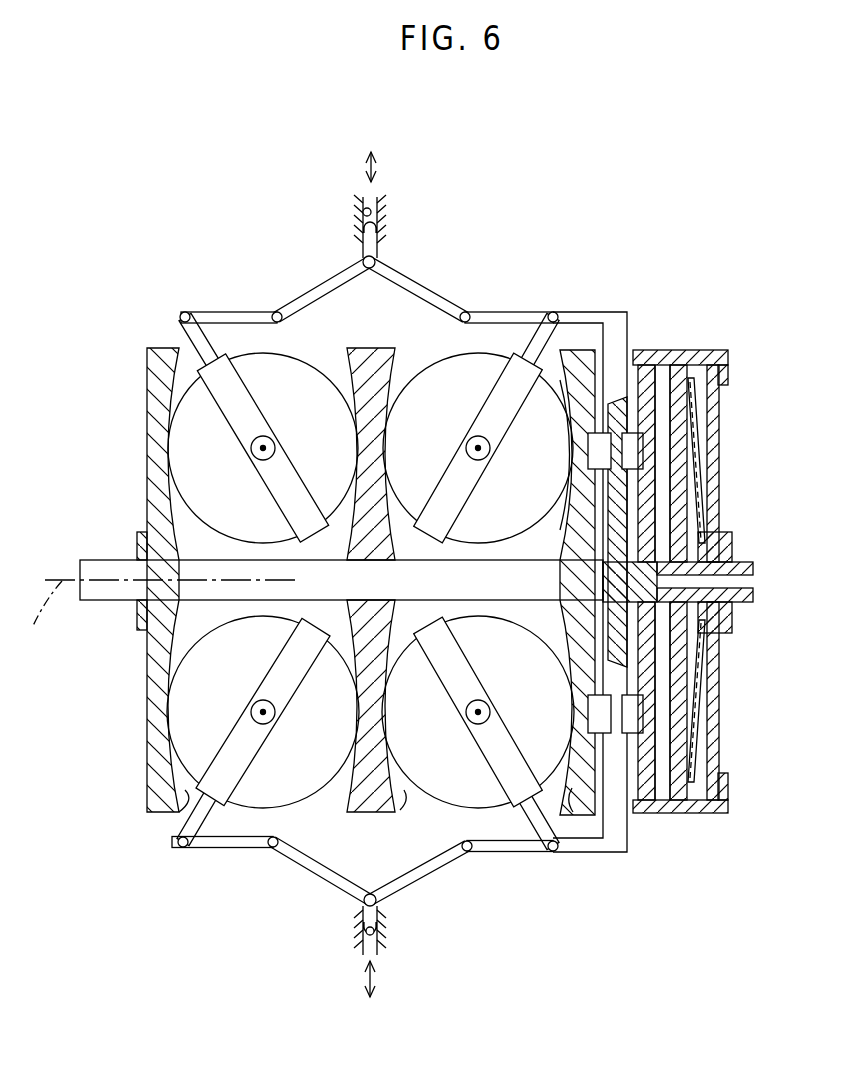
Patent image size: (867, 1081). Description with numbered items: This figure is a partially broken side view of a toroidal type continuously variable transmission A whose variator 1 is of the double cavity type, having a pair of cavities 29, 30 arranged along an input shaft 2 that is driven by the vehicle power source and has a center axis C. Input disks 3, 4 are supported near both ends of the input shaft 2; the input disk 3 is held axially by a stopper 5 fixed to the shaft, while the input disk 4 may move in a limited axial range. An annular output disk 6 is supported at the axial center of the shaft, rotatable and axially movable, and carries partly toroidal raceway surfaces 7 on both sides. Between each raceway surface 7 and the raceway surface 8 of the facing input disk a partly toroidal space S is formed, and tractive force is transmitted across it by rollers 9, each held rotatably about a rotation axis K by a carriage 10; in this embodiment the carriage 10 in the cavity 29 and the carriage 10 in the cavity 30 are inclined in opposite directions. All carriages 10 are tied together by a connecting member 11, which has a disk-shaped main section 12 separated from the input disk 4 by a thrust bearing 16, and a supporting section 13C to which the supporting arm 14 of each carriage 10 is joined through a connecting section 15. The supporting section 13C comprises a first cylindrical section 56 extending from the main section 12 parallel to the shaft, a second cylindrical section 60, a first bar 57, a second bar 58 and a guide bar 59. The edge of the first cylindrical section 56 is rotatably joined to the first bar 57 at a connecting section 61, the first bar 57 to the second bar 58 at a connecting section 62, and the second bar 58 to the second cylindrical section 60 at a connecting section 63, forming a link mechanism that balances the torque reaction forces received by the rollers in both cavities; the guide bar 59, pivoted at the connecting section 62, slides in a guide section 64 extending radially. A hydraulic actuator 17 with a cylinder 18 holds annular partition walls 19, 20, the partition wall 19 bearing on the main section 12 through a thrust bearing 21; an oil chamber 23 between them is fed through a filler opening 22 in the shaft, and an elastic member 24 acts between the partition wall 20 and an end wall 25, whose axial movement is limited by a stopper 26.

The variator 1 is at (261, 299).
The input shaft 2 is at (112, 558).
The input disk 3 is at (145, 385).
The input disk 4 is at (583, 347).
The stopper 5 is at (137, 622).
The output disk 6 is at (370, 817).
The raceway surface 7 is at (401, 380).
The raceway surface 8 is at (556, 406).
The roller 9 is at (199, 340).
The carriage 10 is at (224, 415).
The connecting member 11 is at (583, 305).
The main section 12 is at (628, 340).
The supporting section 13C is at (289, 291).
The supporting arm 14 is at (512, 312).
The connecting section 15 is at (181, 314).
The thrust bearing 16 is at (590, 456).
The hydraulic actuator 17 is at (727, 588).
The cylinder 18 is at (660, 815).
The partition wall 19 is at (655, 380).
The partition wall 20 is at (680, 412).
The thrust bearing 21 is at (634, 456).
The filler opening 22 is at (752, 582).
The oil chamber 23 is at (662, 490).
The elastic member 24 is at (695, 717).
The end wall 25 is at (714, 687).
The stopper 26 is at (732, 546).
The cavity 29 is at (188, 800).
The cavity 30 is at (402, 826).
The first cylindrical section 56 is at (487, 311).
The first bar 57 is at (416, 289).
The second bar 58 is at (319, 291).
The guide bar 59 is at (379, 250).
The second cylindrical section 60 is at (243, 310).
The connecting section 61 is at (468, 308).
The connecting section 62 is at (371, 270).
The connecting section 63 is at (283, 320).
The guide section 64 is at (363, 210).
The continuously variable transmission A is at (725, 300).
The center axis C is at (36, 620).
The rotation axis K is at (266, 458).
The space S is at (336, 555).